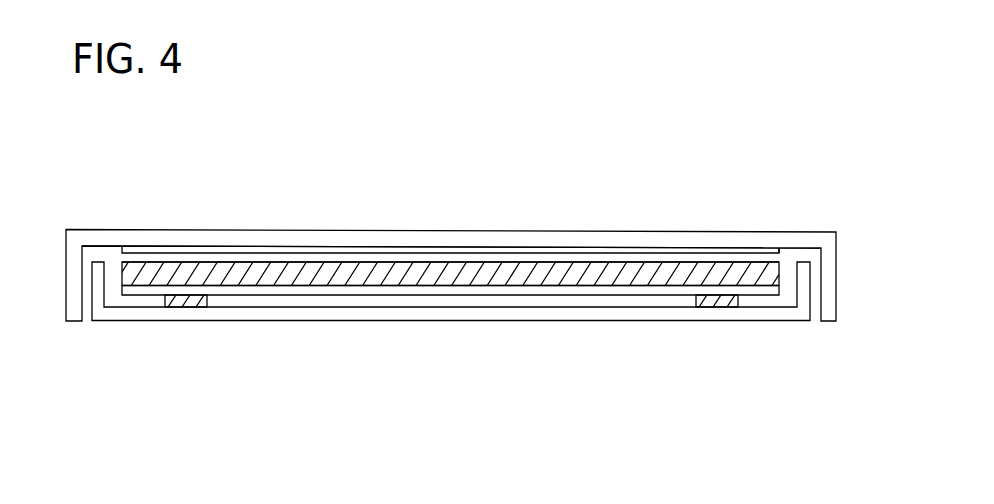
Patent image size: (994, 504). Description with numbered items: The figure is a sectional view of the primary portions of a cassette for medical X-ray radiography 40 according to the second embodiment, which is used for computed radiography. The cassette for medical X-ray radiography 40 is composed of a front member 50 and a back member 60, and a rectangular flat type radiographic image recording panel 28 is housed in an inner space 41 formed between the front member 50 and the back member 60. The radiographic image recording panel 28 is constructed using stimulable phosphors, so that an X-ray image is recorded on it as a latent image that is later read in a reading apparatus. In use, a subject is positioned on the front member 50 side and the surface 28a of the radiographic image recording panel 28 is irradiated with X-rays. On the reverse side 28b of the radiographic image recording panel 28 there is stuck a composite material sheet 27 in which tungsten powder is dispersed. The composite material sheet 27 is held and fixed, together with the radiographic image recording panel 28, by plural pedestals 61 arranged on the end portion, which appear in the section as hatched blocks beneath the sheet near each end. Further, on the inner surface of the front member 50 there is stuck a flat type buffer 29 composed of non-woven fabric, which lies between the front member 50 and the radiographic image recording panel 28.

The composite material sheet 27 is at (522, 296).
The radiographic image recording panel 28 is at (230, 272).
The surface 28a is at (285, 282).
The reverse side 28b is at (251, 287).
The flat type buffer 29 is at (428, 252).
The cassette for medical X-ray radiography 40 is at (519, 226).
The inner space 41 is at (777, 258).
The front member 50 is at (358, 239).
The back member 60 is at (361, 332).
The pedestals 61 is at (184, 307).